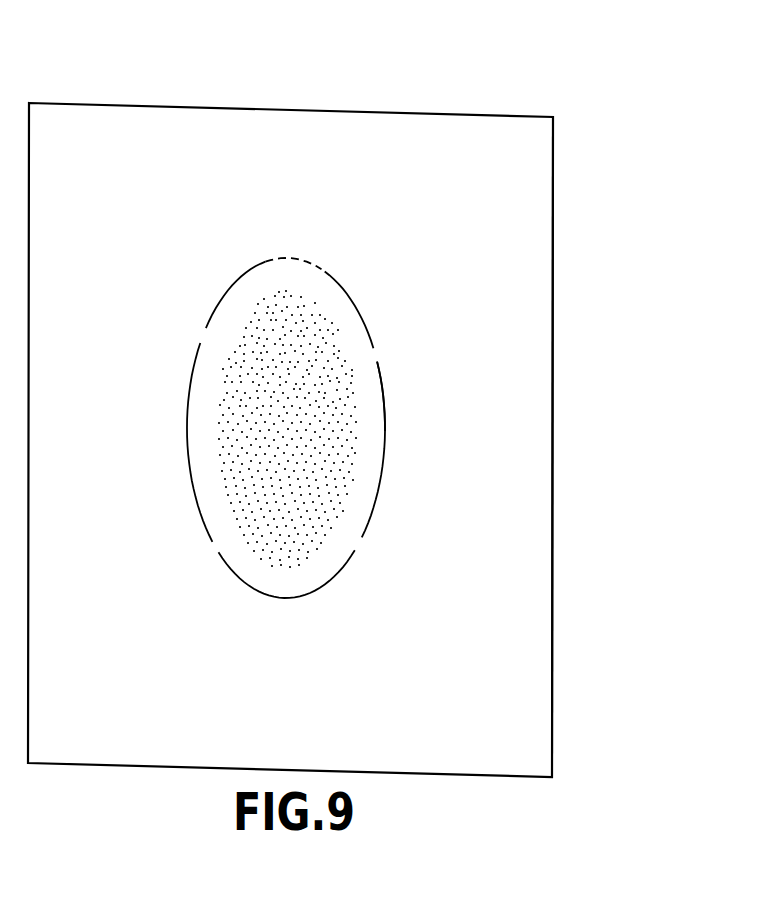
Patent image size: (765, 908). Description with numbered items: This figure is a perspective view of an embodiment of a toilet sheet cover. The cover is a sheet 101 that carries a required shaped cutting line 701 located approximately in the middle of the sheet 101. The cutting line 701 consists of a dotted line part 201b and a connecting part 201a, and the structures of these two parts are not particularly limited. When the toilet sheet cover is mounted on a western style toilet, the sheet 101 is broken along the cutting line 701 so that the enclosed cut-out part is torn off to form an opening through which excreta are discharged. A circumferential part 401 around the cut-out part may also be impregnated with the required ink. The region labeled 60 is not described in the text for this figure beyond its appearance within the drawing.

The sheet 101 is at (542, 155).
The circumferential part 401 is at (542, 228).
The connecting part 201a is at (290, 253).
The dotted line part 201b is at (380, 351).
The elliptical region 60 is at (375, 432).
The cutting line 701 is at (378, 498).